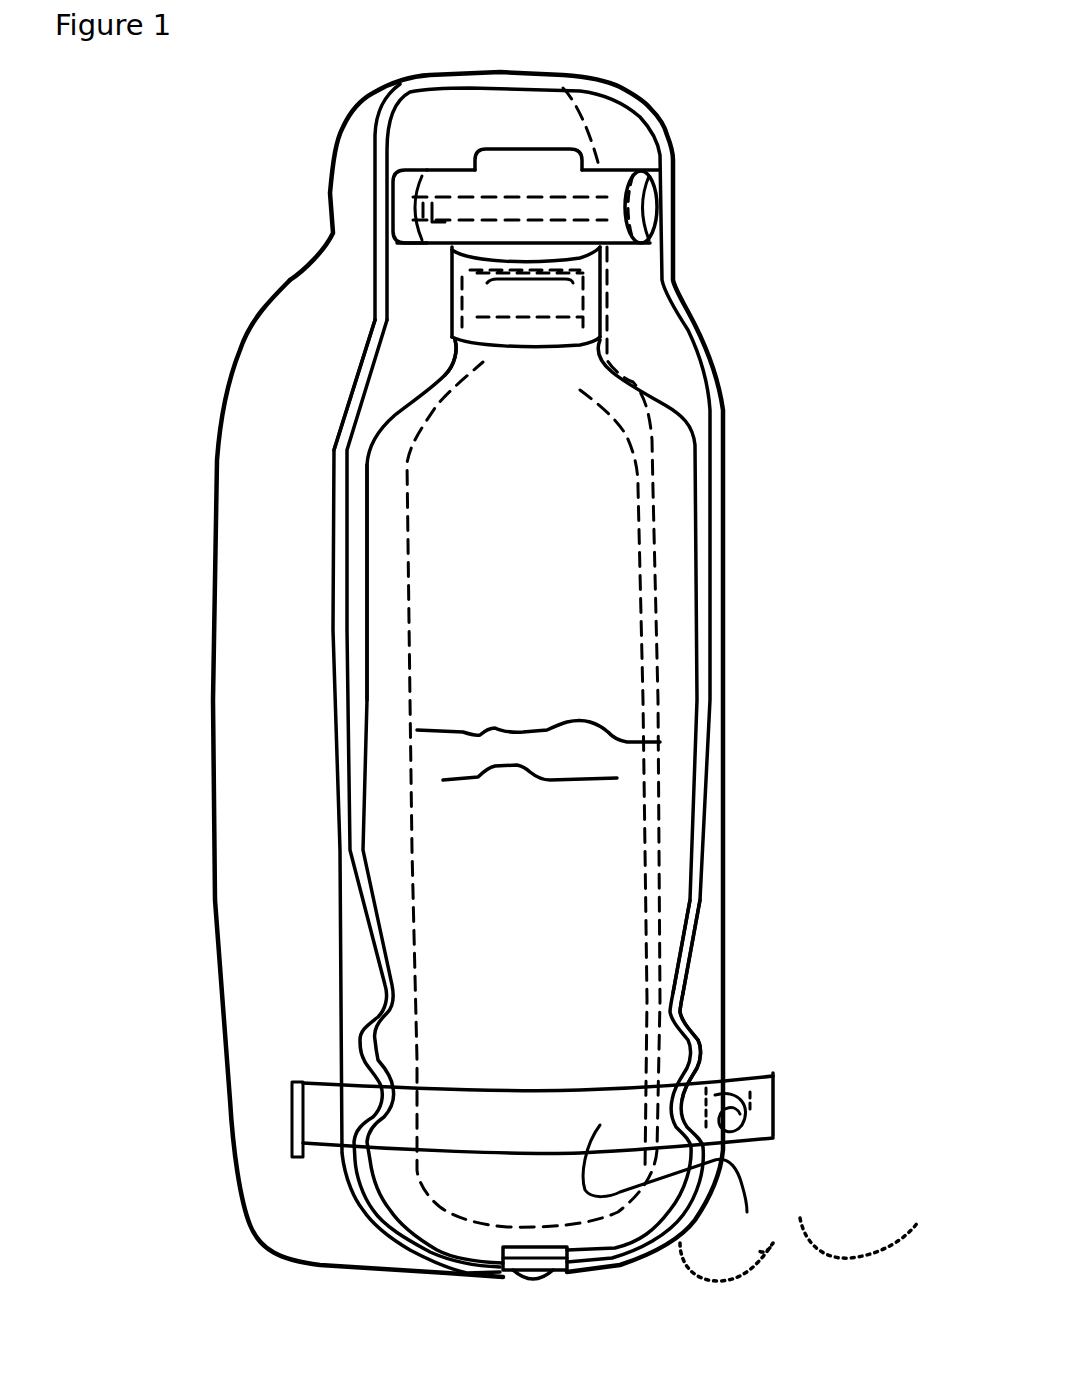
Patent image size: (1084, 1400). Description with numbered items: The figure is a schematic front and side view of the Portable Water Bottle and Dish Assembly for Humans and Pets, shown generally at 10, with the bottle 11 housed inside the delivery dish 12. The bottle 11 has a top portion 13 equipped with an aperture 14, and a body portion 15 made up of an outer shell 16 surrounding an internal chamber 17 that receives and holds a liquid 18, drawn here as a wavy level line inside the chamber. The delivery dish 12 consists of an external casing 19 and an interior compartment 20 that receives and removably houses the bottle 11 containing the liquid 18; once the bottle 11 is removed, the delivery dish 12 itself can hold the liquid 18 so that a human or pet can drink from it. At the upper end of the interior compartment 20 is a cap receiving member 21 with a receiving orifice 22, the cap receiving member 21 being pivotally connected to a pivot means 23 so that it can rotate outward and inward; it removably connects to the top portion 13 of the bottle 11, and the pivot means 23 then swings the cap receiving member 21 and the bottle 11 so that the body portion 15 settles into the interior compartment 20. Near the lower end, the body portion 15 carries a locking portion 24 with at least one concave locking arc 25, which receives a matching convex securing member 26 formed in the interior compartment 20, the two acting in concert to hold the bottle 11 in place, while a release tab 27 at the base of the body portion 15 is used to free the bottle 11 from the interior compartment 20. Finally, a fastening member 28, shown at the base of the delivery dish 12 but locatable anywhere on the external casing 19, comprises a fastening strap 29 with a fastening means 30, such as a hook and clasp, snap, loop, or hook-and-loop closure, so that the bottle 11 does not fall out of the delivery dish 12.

The portable water bottle and dish assembly 10 is at (143, 92).
The bottle 11 is at (715, 804).
The delivery dish 12 is at (740, 427).
The top portion 13 is at (457, 347).
The aperture 14 is at (527, 272).
The body portion 15 is at (373, 803).
The outer shell 16 is at (397, 682).
The internal chamber 17 is at (430, 573).
The liquid 18 is at (660, 742).
The external casing 19 is at (265, 945).
The interior compartment 20 is at (380, 405).
The cap receiving member 21 is at (537, 160).
The receiving orifice 22 is at (597, 290).
The pivot means 23 is at (655, 193).
The locking portion 24 is at (683, 1043).
The concave locking arc 25 is at (677, 1000).
The convex securing member 26 is at (707, 960).
The release tab 27 is at (557, 1280).
The fastening member 28 is at (283, 1120).
The fastening strap 29 is at (750, 1203).
The fastening means 30 is at (745, 1100).